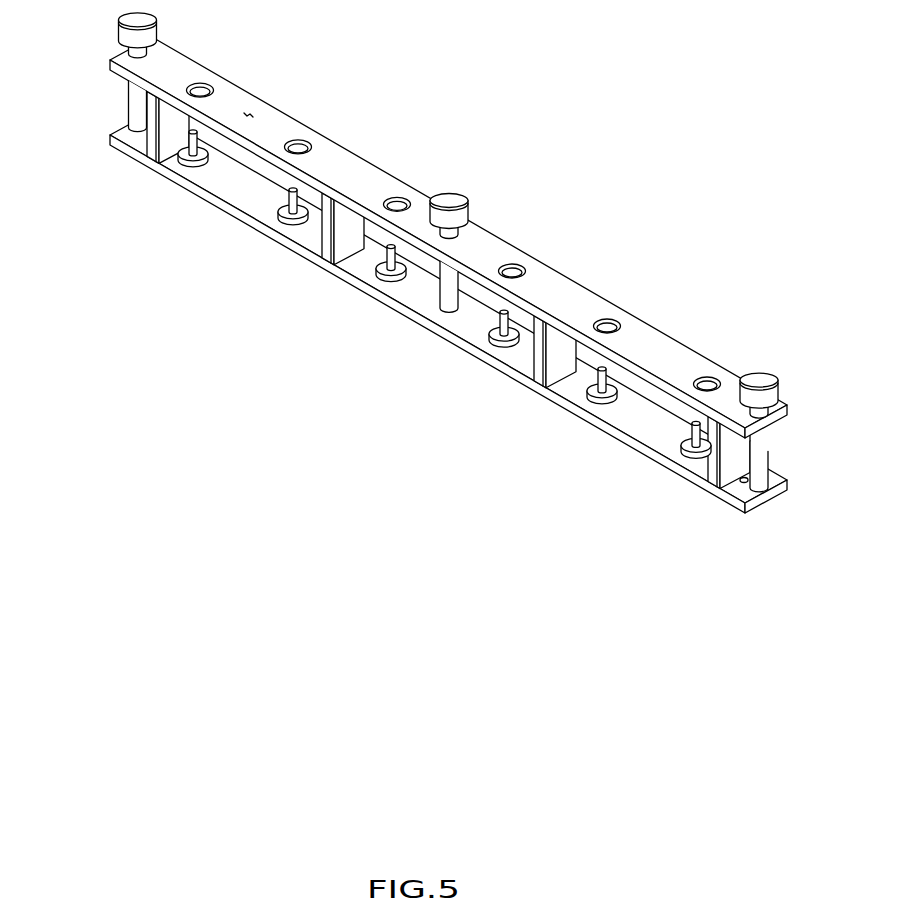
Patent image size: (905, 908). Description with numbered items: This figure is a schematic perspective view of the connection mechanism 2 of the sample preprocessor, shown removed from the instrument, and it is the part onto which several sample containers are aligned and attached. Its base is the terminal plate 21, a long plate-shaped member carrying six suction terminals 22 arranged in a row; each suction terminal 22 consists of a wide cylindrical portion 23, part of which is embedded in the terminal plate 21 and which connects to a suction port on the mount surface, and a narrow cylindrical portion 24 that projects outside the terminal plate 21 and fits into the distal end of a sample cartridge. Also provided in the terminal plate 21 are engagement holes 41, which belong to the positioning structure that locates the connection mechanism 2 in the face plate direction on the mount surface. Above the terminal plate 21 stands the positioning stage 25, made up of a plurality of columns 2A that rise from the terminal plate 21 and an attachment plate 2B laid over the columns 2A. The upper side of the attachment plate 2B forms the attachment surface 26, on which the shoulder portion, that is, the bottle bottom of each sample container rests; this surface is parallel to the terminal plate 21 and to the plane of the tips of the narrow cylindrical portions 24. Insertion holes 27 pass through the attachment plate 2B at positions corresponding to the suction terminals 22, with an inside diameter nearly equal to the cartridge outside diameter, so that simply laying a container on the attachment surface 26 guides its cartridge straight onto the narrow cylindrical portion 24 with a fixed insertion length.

The connection mechanism 2 is at (422, 292).
The columns 2A is at (151, 134).
The attachment plate 2B is at (196, 64).
The terminal plate 21 is at (125, 128).
The suction terminal 22 is at (402, 346).
The wide cylindrical portion 23 is at (190, 146).
The narrow cylindrical portion 24 is at (182, 158).
The positioning stage 25 is at (100, 45).
The attachment surface 26 is at (252, 114).
The insertion hole 27 is at (214, 90).
The engagement hole 41 is at (743, 484).